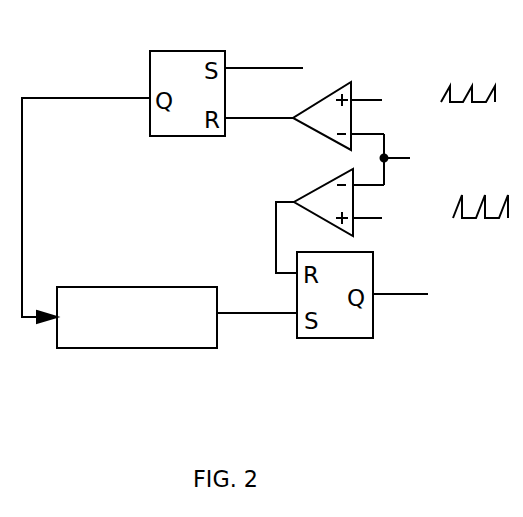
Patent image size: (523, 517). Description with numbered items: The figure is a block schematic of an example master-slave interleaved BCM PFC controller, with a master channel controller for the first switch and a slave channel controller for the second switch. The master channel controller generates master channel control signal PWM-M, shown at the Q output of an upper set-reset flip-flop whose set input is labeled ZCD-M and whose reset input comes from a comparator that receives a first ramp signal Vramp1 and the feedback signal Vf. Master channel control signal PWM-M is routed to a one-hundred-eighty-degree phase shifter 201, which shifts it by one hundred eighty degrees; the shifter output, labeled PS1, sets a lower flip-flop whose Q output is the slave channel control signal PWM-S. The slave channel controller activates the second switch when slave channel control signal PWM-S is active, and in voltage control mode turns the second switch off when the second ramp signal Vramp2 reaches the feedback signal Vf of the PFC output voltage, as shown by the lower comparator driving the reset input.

The phase shifter 201 is at (207, 346).
The master channel control signal PWM-M is at (115, 98).
The master zero-current-detection signal ZCD-M is at (278, 68).
The first ramp voltage Vramp1 is at (376, 100).
The feedback signal Vf is at (410, 158).
The second ramp signal Vramp2 is at (376, 218).
The phase-shifted signal PS1 is at (243, 313).
The slave channel control signal PWM-S is at (423, 294).